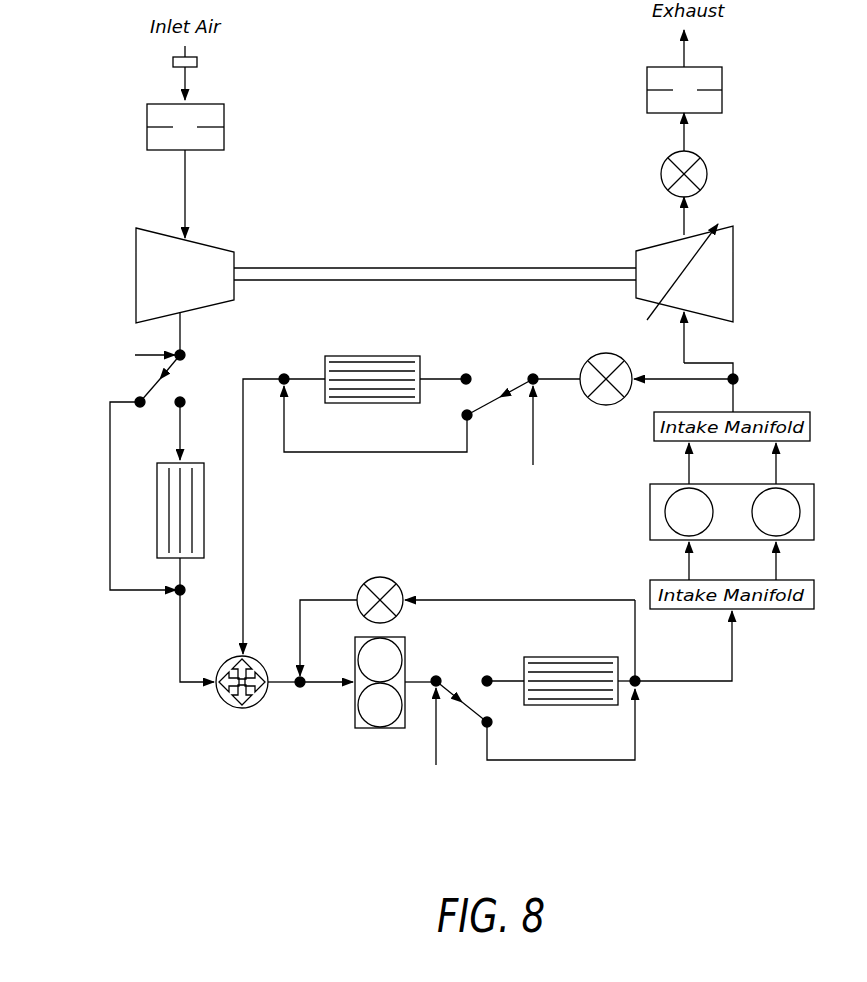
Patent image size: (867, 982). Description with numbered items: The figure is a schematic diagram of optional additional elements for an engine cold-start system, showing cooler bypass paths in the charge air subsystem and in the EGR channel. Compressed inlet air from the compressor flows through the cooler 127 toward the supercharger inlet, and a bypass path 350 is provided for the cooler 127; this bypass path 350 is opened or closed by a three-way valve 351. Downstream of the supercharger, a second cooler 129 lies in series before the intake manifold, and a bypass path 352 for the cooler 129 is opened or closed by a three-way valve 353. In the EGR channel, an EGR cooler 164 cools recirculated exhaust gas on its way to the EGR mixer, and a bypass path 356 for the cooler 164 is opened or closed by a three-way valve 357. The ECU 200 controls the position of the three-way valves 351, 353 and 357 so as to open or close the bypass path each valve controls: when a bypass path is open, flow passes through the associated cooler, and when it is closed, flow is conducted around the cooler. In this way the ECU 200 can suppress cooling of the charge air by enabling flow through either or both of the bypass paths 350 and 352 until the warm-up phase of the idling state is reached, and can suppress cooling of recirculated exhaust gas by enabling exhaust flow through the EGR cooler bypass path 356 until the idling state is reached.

The cooler 127 is at (157, 545).
The second cooler 129 is at (537, 705).
The EGR cooler 164 is at (358, 356).
The ECU 200 is at (316, 576).
The bypass path 350 is at (95, 557).
The three-way valve 351 is at (192, 382).
The bypass path 352 is at (654, 727).
The three-way valve 353 is at (461, 655).
The bypass path 356 is at (362, 462).
The three-way valve 357 is at (494, 364).